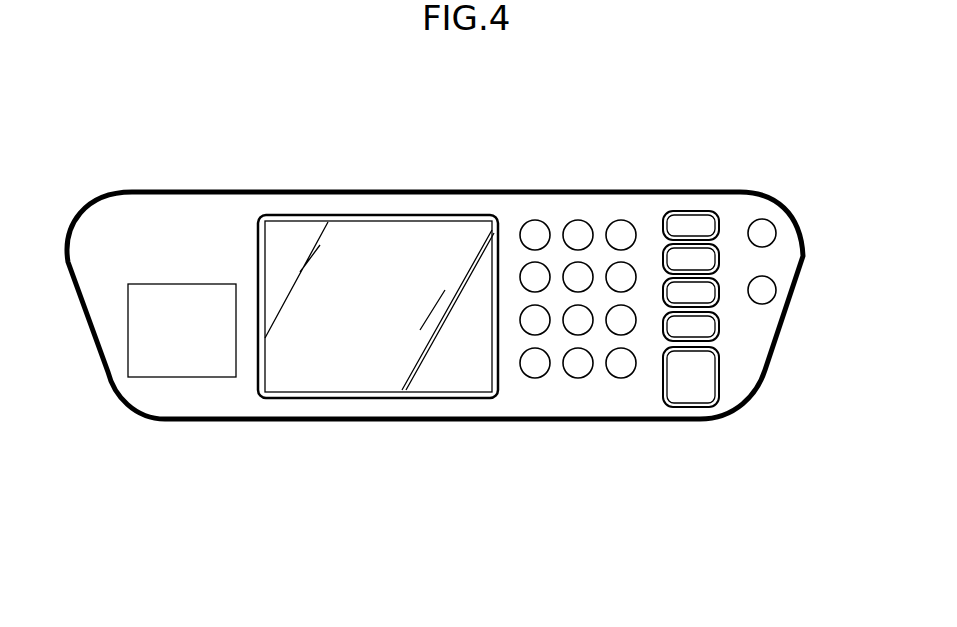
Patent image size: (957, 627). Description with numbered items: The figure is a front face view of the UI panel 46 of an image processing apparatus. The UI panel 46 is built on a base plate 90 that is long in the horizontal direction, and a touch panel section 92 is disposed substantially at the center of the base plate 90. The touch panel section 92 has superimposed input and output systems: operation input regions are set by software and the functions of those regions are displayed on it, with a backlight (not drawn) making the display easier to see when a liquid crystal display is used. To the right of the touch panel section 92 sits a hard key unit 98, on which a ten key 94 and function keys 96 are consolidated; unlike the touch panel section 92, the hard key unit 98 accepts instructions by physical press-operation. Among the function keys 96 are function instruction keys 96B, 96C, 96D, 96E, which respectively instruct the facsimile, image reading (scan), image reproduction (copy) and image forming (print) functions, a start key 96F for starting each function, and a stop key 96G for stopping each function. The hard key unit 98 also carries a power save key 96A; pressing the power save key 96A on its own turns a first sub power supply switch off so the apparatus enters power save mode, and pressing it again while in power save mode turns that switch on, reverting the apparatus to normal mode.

The UI panel 46 is at (496, 178).
The base plate 90 is at (222, 214).
The touch panel section 92 is at (357, 377).
The ten key 94 is at (637, 432).
The function keys 96 is at (775, 432).
The power save key 96A is at (767, 228).
The function instruction key 96B is at (693, 220).
The function instruction key 96C is at (705, 258).
The function instruction key 96D is at (710, 295).
The function instruction key 96E is at (710, 330).
The start key 96F is at (708, 378).
The stop key 96G is at (765, 293).
The hard key unit 98 is at (708, 475).